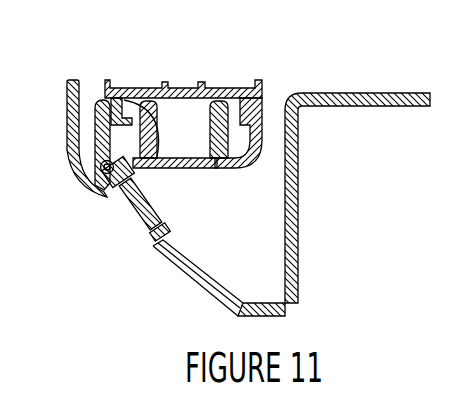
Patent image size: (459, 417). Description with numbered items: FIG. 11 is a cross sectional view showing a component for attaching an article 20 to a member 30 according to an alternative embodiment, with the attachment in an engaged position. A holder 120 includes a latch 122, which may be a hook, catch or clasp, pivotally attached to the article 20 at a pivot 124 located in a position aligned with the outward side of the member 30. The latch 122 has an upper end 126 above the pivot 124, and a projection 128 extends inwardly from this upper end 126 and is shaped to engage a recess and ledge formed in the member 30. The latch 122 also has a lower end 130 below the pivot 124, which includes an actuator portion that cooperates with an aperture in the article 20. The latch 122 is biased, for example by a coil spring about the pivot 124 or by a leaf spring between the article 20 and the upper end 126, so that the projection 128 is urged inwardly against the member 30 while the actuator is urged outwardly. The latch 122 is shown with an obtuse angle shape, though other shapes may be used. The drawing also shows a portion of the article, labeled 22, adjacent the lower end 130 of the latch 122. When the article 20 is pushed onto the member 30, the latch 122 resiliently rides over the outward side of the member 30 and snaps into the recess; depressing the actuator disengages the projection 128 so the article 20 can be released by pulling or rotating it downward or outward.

The article 20 is at (294, 304).
The sealing lip of frame member 22 is at (197, 253).
The member 30 is at (261, 82).
The holder 120 is at (193, 62).
The latch 122 is at (95, 142).
The pivot 124 is at (103, 181).
The upper end 126 is at (93, 125).
The projection 128 is at (110, 97).
The lower end 130 is at (150, 212).